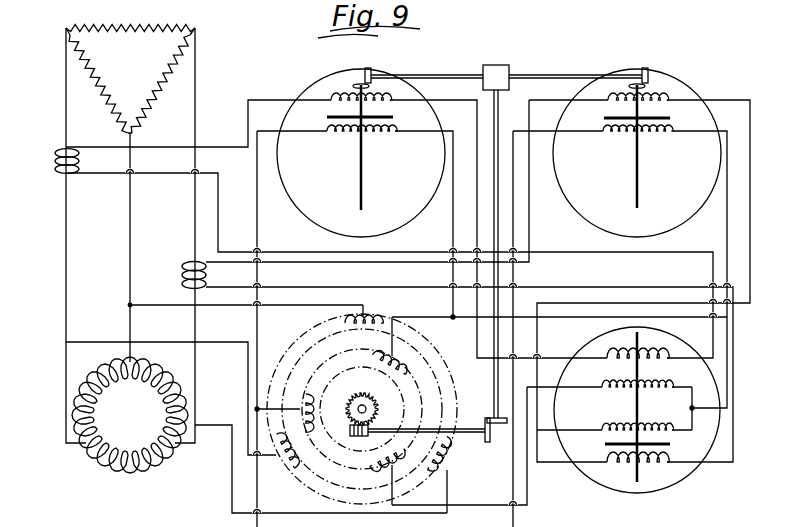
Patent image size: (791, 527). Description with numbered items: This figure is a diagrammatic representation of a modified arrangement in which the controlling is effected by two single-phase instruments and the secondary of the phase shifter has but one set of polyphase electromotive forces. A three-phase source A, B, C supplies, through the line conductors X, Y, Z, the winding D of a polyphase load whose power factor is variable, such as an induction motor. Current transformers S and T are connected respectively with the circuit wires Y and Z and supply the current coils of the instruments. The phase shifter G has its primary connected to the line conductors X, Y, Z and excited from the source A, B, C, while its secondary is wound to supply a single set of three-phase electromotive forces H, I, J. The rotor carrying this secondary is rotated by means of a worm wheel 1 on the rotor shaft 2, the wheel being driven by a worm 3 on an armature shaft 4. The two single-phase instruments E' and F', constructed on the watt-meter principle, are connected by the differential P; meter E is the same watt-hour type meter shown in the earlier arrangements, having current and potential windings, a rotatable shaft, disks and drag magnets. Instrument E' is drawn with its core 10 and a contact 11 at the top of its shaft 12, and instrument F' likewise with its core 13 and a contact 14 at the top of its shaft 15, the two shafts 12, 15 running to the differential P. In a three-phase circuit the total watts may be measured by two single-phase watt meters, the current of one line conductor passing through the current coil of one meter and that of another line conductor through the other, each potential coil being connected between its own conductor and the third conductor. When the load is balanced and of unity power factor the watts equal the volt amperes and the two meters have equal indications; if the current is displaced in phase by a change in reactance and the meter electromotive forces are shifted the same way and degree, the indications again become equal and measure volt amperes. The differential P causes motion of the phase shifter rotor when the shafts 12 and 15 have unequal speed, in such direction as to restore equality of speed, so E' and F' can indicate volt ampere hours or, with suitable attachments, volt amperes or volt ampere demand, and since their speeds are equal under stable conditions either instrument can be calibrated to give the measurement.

The worm wheel 1 is at (352, 396).
The rotor shaft 2 is at (356, 410).
The worm 3 is at (356, 437).
The armature shaft 4 is at (465, 438).
The core of relay E' 10 is at (366, 161).
The contact 11 is at (361, 72).
The shaft 12 is at (427, 65).
The core of relay F' 13 is at (635, 167).
The contact 14 is at (654, 75).
The shaft 15 is at (575, 66).
The source of three phase current A is at (101, 84).
The source of three phase current B is at (160, 84).
The source of three phase current C is at (130, 38).
The current transformer S is at (77, 161).
The current transformer T is at (206, 275).
The conductor X is at (237, 254).
The conductor Y is at (311, 270).
The conductor Z is at (64, 235).
The winding of a polyphase load D is at (130, 415).
The meter E is at (637, 421).
The single phase instrument E' is at (361, 145).
The single phase instrument F' is at (637, 147).
The phase shifter G is at (448, 486).
The secondary electromotive force H is at (391, 360).
The secondary electromotive force I is at (284, 411).
The secondary electromotive force J is at (389, 465).
The differential P is at (498, 66).